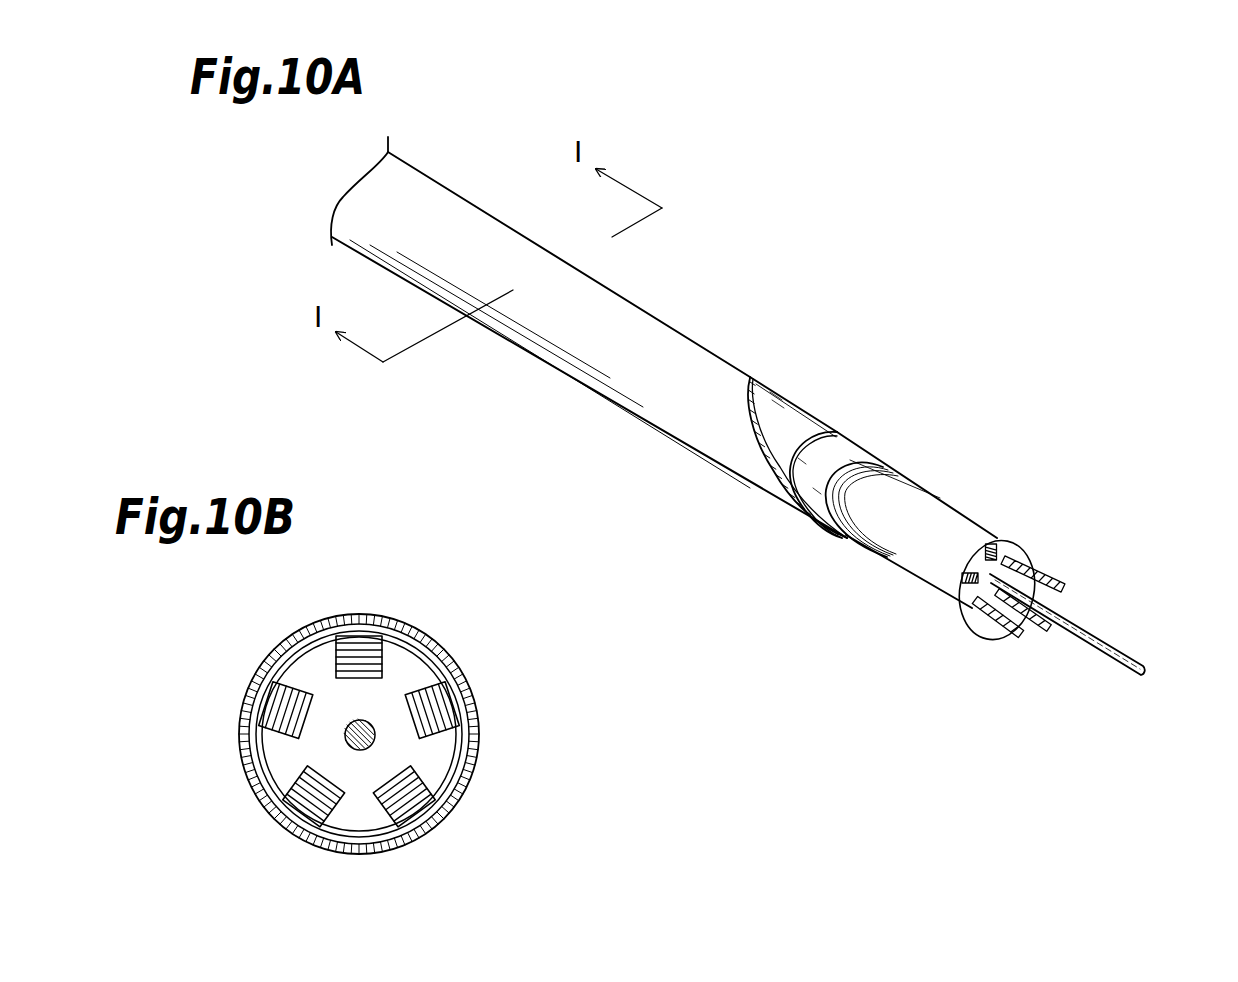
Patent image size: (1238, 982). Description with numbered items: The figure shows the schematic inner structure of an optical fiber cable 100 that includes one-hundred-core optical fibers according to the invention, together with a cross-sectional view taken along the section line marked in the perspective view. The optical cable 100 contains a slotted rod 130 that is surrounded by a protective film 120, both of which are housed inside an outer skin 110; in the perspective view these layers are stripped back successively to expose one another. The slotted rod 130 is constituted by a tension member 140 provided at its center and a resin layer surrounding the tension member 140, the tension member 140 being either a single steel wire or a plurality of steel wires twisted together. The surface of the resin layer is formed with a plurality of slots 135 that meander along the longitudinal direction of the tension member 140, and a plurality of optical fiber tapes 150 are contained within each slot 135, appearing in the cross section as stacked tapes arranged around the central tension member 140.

In FIG. 10A, the optical fiber cable 100 is at (760, 406).
In FIG. 10B, the optical fiber cable 100 is at (363, 729).
In FIG. 10A, the skin 110 is at (757, 380).
In FIG. 10B, the skin 110 is at (467, 675).
In FIG. 10A, the protective film 120 is at (837, 453).
In FIG. 10B, the protective film 120 is at (468, 740).
In FIG. 10A, the slotted rod 130 is at (910, 497).
In FIG. 10B, the slotted rod 130 is at (372, 828).
In FIG. 10B, the slots 135 is at (293, 680).
In FIG. 10A, the tension member 140 is at (1123, 653).
In FIG. 10B, the tension member 140 is at (347, 737).
In FIG. 10A, the optical fiber tapes 150 is at (1065, 620).
In FIG. 10B, the optical fiber tapes 150 is at (273, 698).